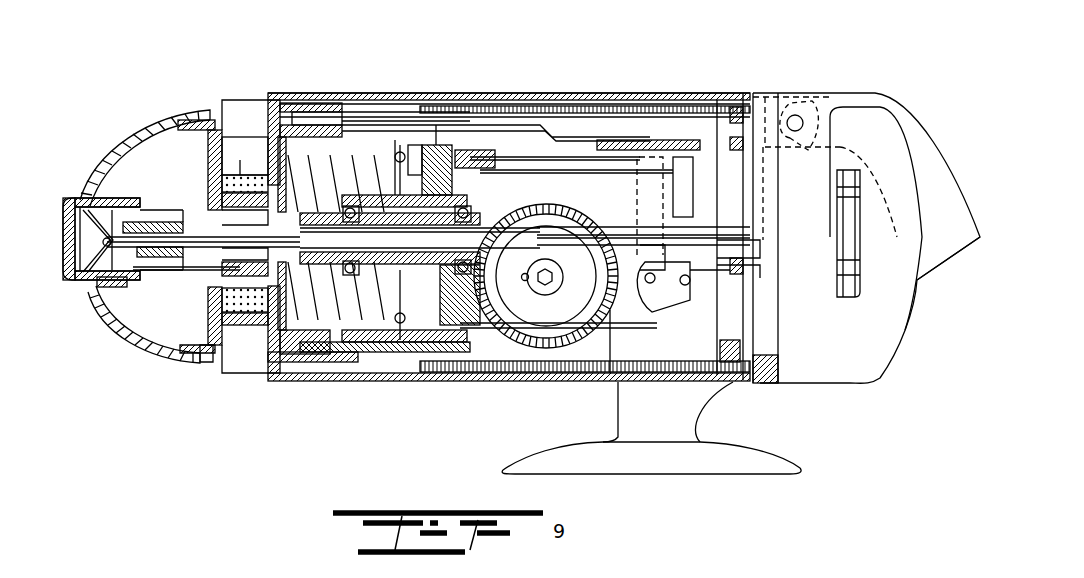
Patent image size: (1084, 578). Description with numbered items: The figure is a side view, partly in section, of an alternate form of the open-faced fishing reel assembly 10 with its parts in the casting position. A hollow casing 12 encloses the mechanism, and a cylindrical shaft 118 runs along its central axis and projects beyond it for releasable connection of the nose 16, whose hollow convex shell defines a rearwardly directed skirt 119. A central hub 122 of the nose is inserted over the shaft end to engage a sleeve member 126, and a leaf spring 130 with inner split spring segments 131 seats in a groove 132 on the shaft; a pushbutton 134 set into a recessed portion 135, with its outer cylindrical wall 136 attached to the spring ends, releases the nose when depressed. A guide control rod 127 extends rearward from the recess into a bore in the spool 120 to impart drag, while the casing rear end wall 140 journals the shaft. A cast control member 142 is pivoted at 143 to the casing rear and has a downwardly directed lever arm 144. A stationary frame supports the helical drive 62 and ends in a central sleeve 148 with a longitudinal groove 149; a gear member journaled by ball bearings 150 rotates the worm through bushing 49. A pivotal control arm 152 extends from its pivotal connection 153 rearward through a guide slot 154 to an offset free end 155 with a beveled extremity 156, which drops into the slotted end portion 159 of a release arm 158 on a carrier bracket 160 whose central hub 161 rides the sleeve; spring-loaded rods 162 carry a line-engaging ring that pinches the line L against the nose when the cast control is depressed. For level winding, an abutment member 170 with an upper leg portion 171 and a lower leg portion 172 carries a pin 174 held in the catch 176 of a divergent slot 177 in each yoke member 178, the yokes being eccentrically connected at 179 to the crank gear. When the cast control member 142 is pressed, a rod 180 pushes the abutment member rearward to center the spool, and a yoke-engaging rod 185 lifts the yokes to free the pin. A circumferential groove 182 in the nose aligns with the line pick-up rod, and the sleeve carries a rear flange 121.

The open-faced fishing reel assembly 10 is at (572, 55).
The hollow casing 12 is at (530, 92).
The nose 16 is at (148, 135).
The bushing 49 is at (268, 316).
The helical drive 62 is at (362, 200).
The cylindrical shaft 118 is at (105, 247).
The skirt 119 is at (190, 120).
The spool 120 is at (240, 273).
The rear flange 121 is at (215, 355).
The central hub 122 is at (153, 222).
The sleeve member 126 is at (735, 258).
The guide control rod 127 is at (155, 270).
The leaf spring 130 is at (137, 258).
The split spring segments 131 is at (135, 283).
The groove 132 is at (86, 212).
The pushbutton 134 is at (85, 210).
The recessed portion 135 is at (103, 207).
The outer cylindrical wall 136 is at (85, 195).
The rear end wall 140 is at (790, 318).
The cast control member 142 is at (880, 96).
The pivot 143 is at (800, 115).
The lever arm 144 is at (772, 178).
The central sleeve 148 is at (352, 285).
The longitudinal groove 149 is at (372, 355).
The ball bearings 150 is at (320, 118).
The pivotal control arm 152 is at (560, 127).
The pivotal connection 153 is at (400, 145).
The guide slot 154 is at (460, 122).
The offset free end 155 is at (610, 140).
The beveled extremity 156 is at (683, 157).
The release arm 158 is at (655, 165).
The slotted end portion 159 is at (578, 152).
The carrier bracket 160 is at (745, 364).
The central hub 161 is at (747, 270).
The spring-loaded rods 162 is at (350, 108).
The abutment member 170 is at (700, 175).
The upwardly directed leg portion 171 is at (745, 200).
The downwardly directed leg portion 172 is at (690, 282).
The pin 174 is at (700, 280).
The catch 176 is at (668, 306).
The slot 177 is at (660, 277).
The yoke members 178 is at (633, 329).
The eccentric connection 179 is at (525, 282).
The rod 180 is at (584, 173).
The circumferential groove 182 is at (212, 122).
The yoke-engaging rod 185 is at (615, 388).
The fishing line L is at (248, 176).